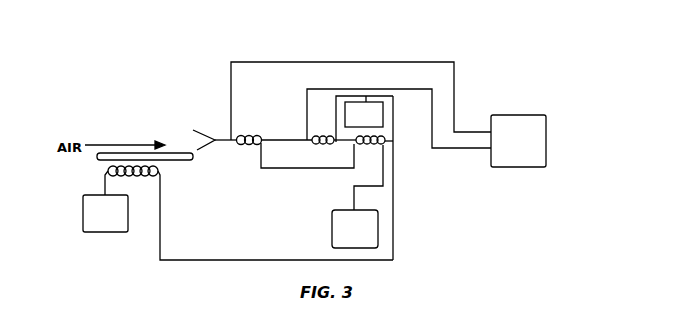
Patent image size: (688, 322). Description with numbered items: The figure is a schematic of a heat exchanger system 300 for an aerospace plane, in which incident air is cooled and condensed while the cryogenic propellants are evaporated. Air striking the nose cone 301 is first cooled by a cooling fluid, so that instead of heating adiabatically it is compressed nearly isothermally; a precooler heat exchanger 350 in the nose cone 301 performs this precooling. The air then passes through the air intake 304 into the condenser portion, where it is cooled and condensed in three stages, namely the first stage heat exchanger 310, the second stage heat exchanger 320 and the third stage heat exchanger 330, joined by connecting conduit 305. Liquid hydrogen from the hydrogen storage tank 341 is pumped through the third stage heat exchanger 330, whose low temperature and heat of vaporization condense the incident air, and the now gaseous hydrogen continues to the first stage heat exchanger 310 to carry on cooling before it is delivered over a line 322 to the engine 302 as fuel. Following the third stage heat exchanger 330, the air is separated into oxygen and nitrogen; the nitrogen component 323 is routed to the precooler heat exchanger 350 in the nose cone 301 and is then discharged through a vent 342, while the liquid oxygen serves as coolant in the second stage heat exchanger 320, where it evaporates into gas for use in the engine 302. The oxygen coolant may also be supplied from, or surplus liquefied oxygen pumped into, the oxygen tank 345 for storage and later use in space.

The heat exchanger system 300 is at (148, 45).
The nose cone 301 is at (177, 150).
The engine 302 is at (530, 113).
The air intake 304 is at (208, 133).
The conduit loop 305 is at (280, 138).
The first stage heat exchanger 310 is at (243, 148).
The second stage heat exchanger 320 is at (318, 146).
The conductor line 322 is at (394, 139).
The nitrogen component 323 is at (395, 203).
The third stage heat exchanger 330 is at (362, 147).
The hydrogen storage tank 341 is at (332, 228).
The vent 342 is at (83, 218).
The oxygen tank 345 is at (364, 119).
The heat exchanger 350 is at (145, 176).